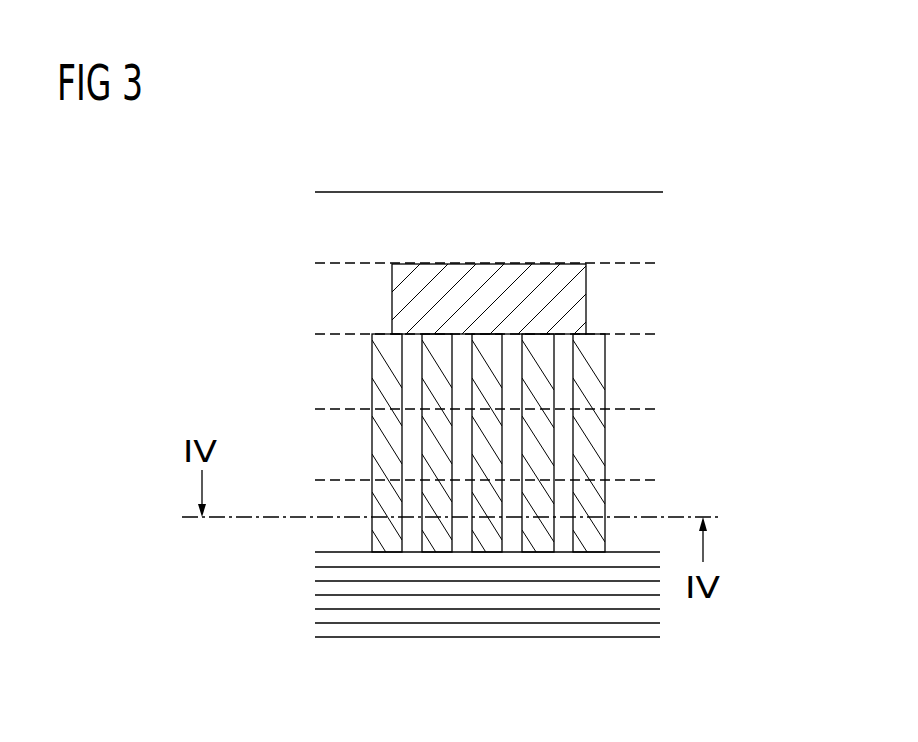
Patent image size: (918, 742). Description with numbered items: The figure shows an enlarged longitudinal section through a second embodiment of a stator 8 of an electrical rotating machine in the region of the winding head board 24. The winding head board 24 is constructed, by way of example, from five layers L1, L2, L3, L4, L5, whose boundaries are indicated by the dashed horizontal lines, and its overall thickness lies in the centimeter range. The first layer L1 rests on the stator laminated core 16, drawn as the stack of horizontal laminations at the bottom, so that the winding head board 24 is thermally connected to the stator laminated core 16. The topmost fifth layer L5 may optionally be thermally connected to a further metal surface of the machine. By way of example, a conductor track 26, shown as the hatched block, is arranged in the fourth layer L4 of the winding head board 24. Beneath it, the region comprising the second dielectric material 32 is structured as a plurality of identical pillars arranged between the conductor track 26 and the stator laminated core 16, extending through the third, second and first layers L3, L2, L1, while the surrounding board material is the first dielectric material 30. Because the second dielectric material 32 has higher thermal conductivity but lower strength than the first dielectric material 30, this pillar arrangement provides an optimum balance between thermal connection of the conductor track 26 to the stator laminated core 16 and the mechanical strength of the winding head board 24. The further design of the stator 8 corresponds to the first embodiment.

The stator 8 is at (710, 165).
The stator laminated core 16 is at (622, 640).
The winding head board 24 is at (589, 222).
The conductor track 26 is at (392, 303).
The first dielectric material 30 is at (436, 457).
The second dielectric material 32 is at (372, 380).
The first layer L1 is at (643, 497).
The second layer L2 is at (645, 448).
The third layer L3 is at (645, 377).
The fourth layer L4 is at (645, 300).
The fifth layer L5 is at (647, 228).